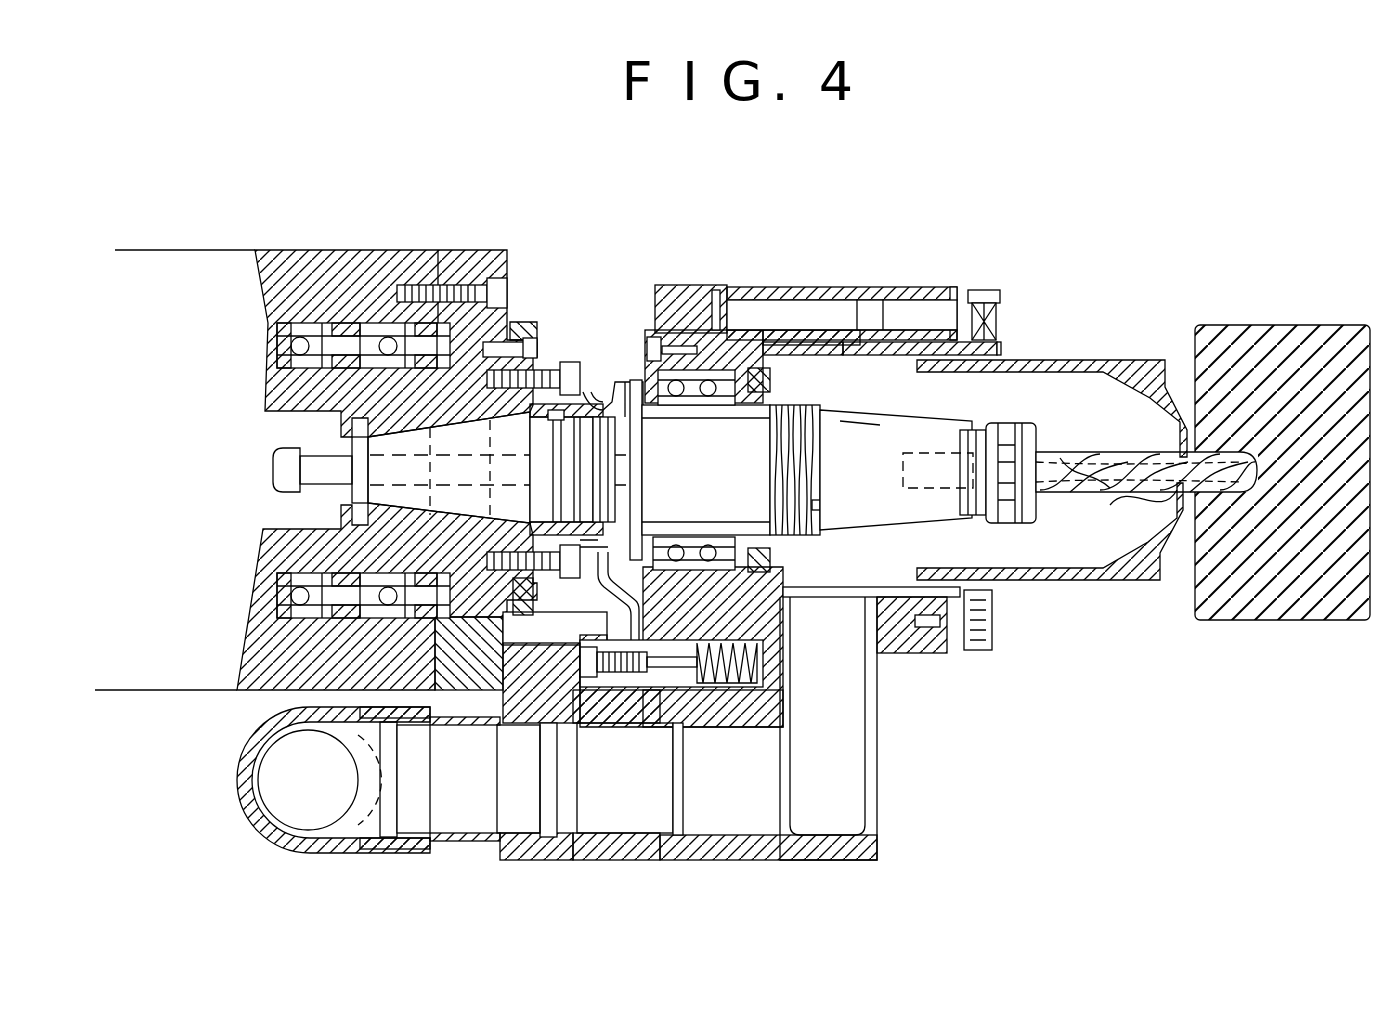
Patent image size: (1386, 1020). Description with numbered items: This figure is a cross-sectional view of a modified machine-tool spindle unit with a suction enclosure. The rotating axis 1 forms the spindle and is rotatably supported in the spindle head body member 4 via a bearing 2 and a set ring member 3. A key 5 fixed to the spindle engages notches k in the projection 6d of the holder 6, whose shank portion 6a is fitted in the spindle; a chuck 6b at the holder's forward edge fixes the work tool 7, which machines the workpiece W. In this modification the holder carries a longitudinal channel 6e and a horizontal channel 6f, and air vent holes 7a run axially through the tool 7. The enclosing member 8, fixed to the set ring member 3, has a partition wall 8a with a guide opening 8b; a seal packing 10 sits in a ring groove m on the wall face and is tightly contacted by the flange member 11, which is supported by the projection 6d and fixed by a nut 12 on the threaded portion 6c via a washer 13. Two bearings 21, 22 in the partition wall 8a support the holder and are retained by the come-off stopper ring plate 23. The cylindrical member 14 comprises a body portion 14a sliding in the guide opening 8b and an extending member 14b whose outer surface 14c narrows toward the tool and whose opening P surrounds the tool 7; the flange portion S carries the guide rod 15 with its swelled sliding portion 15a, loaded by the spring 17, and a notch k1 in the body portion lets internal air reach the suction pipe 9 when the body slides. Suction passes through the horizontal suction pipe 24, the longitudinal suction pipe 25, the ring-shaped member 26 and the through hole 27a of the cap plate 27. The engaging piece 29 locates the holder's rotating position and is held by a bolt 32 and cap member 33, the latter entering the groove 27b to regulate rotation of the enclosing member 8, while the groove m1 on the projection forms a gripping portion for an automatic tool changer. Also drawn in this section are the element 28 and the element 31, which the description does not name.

The rotating axis 1 is at (300, 322).
The bearing 2 is at (377, 573).
The set ring member 3 is at (470, 250).
The spindle head body member 4 is at (372, 250).
The key 5 is at (528, 338).
The holder 6 is at (654, 460).
The shank portion 6a is at (418, 490).
The chuck 6b is at (1020, 528).
The threaded portion 6c is at (812, 440).
The projection 6d is at (640, 440).
The longitudinal channel 6e is at (860, 440).
The horizontal channel 6f is at (606, 415).
The work tool 7 is at (1080, 464).
The air vent hole 7a is at (1120, 455).
The enclosing member 8 is at (700, 288).
The partition wall 8a is at (745, 342).
The guide opening 8b is at (912, 358).
The suction pipe 9 is at (307, 857).
The seal packing 10 is at (780, 300).
The flange member 11 is at (800, 588).
The nut 12 is at (790, 548).
The washer 13 is at (780, 380).
The cylindrical member 14 is at (1047, 397).
The body portion 14a is at (955, 290).
The extending member 14b is at (1065, 358).
The outer surface 14c is at (1170, 540).
The guide rod 15 is at (842, 272).
The swelled sliding portion 15a is at (880, 300).
The spring 17 is at (858, 300).
The bearing 21 is at (672, 340).
The bearing 22 is at (718, 288).
The come-off stopper ring plate 23 is at (640, 345).
The horizontal suction pipe 24 is at (845, 770).
The longitudinal suction pipe 25 is at (737, 810).
The ring-shaped member 26 is at (617, 863).
The cap plate 27 is at (518, 784).
The through hole 27a is at (550, 787).
The groove 27b is at (545, 522).
The partition plate 28 is at (580, 840).
The engaging piece 29 is at (645, 540).
The spring bolt 31 is at (763, 667).
The bolt 32 is at (472, 692).
The cap member 33 is at (583, 700).
The workpiece W is at (1295, 322).
The opening P is at (1170, 495).
The flange portion S is at (1001, 352).
The notch k is at (556, 428).
The notch k1 is at (877, 627).
The ring groove m is at (815, 505).
The groove m1 is at (590, 392).